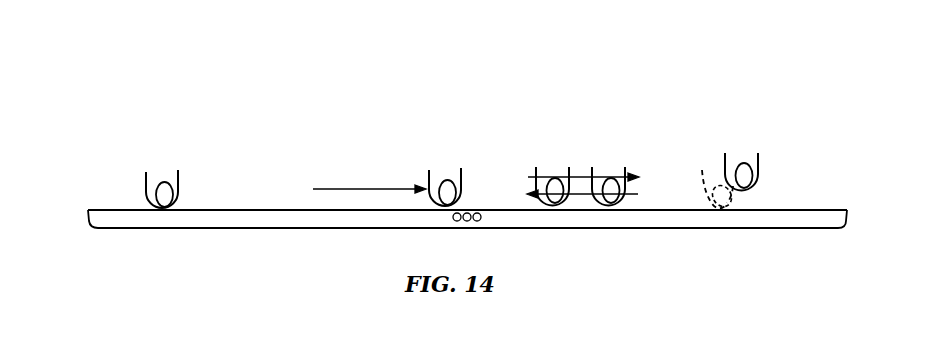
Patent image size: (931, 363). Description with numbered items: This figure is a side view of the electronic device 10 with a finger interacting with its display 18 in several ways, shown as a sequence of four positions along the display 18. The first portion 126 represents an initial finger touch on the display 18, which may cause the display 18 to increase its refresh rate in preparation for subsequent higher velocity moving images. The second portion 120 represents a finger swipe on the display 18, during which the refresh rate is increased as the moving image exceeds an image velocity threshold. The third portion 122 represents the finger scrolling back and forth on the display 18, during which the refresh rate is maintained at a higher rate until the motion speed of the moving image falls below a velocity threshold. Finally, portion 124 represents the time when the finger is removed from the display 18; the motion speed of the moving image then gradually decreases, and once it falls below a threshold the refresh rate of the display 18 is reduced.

The electronic device 10 is at (76, 214).
The display 18 is at (113, 209).
The portion 126 is at (177, 157).
The portion 120 is at (411, 157).
The portion 122 is at (606, 144).
The portion 124 is at (744, 144).